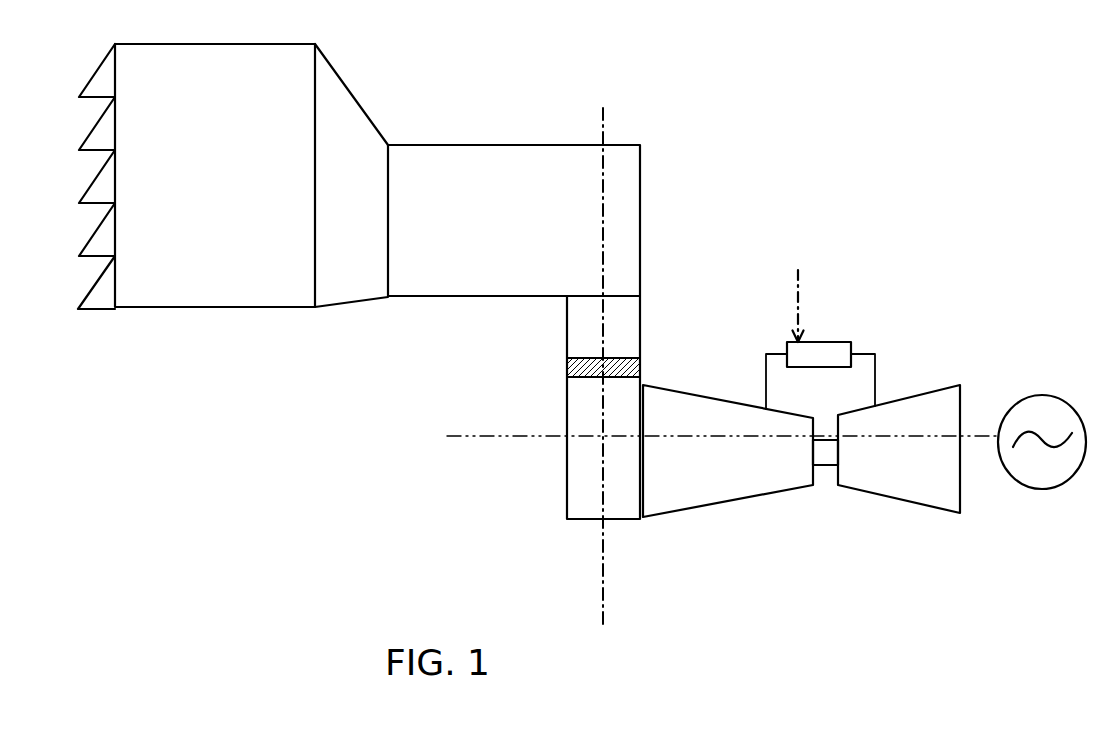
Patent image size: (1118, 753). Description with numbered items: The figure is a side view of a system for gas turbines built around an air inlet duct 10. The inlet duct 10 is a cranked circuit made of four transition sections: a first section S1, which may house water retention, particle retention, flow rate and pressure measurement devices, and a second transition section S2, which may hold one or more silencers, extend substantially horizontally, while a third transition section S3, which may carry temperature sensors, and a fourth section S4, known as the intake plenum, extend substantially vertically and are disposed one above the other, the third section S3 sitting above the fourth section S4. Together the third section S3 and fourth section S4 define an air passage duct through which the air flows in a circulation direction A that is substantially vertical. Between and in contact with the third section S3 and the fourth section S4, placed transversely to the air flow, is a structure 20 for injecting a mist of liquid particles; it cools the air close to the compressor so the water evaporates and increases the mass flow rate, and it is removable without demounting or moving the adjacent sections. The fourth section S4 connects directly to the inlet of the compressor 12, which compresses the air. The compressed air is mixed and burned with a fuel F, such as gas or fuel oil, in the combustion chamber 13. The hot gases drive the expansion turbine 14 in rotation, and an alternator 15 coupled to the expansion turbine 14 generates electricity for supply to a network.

The air inlet duct 10 is at (359, 223).
The compressor 12 is at (708, 392).
The combustion chamber 13 is at (817, 340).
The expansion turbine 14 is at (918, 390).
The alternator 15 is at (1040, 392).
The structure for injecting a mist of liquid particles 20 is at (567, 367).
The first section S1 is at (288, 188).
The second transition section S2 is at (522, 234).
The third transition section S3 is at (626, 333).
The fourth section S4 is at (626, 471).
The circulation direction A is at (615, 354).
The fuel F is at (798, 288).